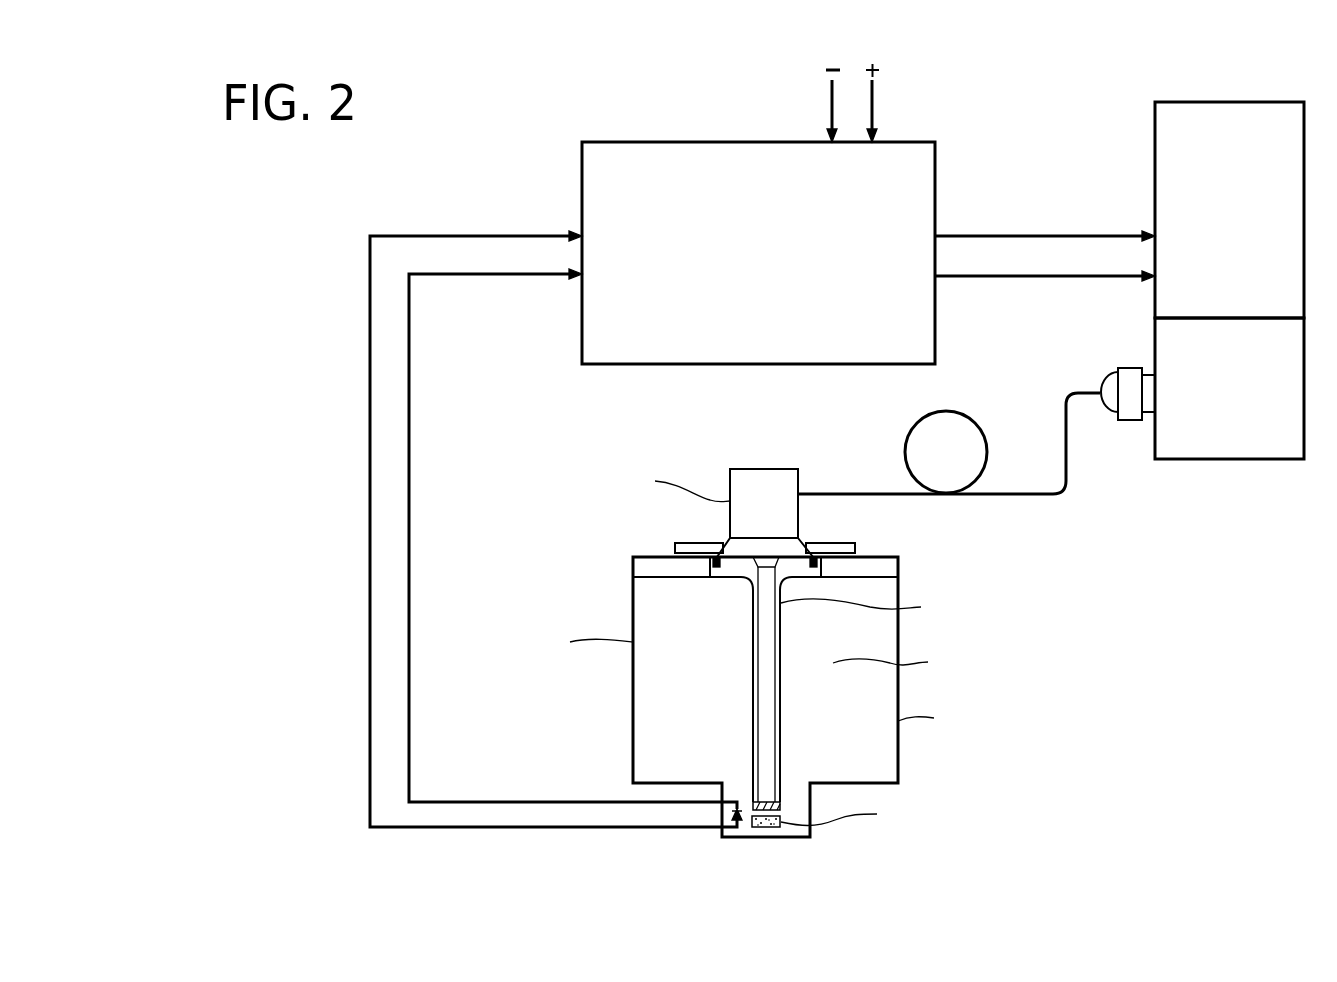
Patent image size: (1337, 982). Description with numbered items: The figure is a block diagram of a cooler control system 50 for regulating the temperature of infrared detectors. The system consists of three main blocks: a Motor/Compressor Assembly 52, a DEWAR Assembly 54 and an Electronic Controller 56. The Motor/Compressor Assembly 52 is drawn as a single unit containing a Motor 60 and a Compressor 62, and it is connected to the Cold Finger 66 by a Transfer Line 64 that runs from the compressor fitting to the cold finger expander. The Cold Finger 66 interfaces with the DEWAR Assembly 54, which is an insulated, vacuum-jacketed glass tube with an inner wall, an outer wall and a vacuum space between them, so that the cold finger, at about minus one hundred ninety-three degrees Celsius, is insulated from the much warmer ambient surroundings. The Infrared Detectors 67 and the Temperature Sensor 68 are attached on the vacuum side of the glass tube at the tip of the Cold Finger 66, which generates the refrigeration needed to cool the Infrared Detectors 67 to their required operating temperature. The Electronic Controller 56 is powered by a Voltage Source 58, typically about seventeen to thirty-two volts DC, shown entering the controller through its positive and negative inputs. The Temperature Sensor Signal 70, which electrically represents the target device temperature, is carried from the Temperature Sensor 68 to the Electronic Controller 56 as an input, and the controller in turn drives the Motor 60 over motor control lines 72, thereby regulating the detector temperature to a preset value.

The cryogenic cooling system 50 is at (515, 128).
The Motor/Compressor Assembly 52 is at (1214, 102).
The DEWAR Assembly 54 is at (633, 583).
The Electronic Controller 56 is at (772, 300).
The Voltage Source 58 is at (834, 92).
The Motor 60 is at (1240, 237).
The Compressor 62 is at (1240, 416).
The Transfer Line 64 is at (1033, 495).
The Cold Finger 66 is at (746, 468).
The Infrared Detectors 67 is at (765, 838).
The Temperature Sensor 68 is at (743, 826).
The Temperature Sensor Signal 70 is at (530, 827).
The motor control lines 72 is at (1011, 276).